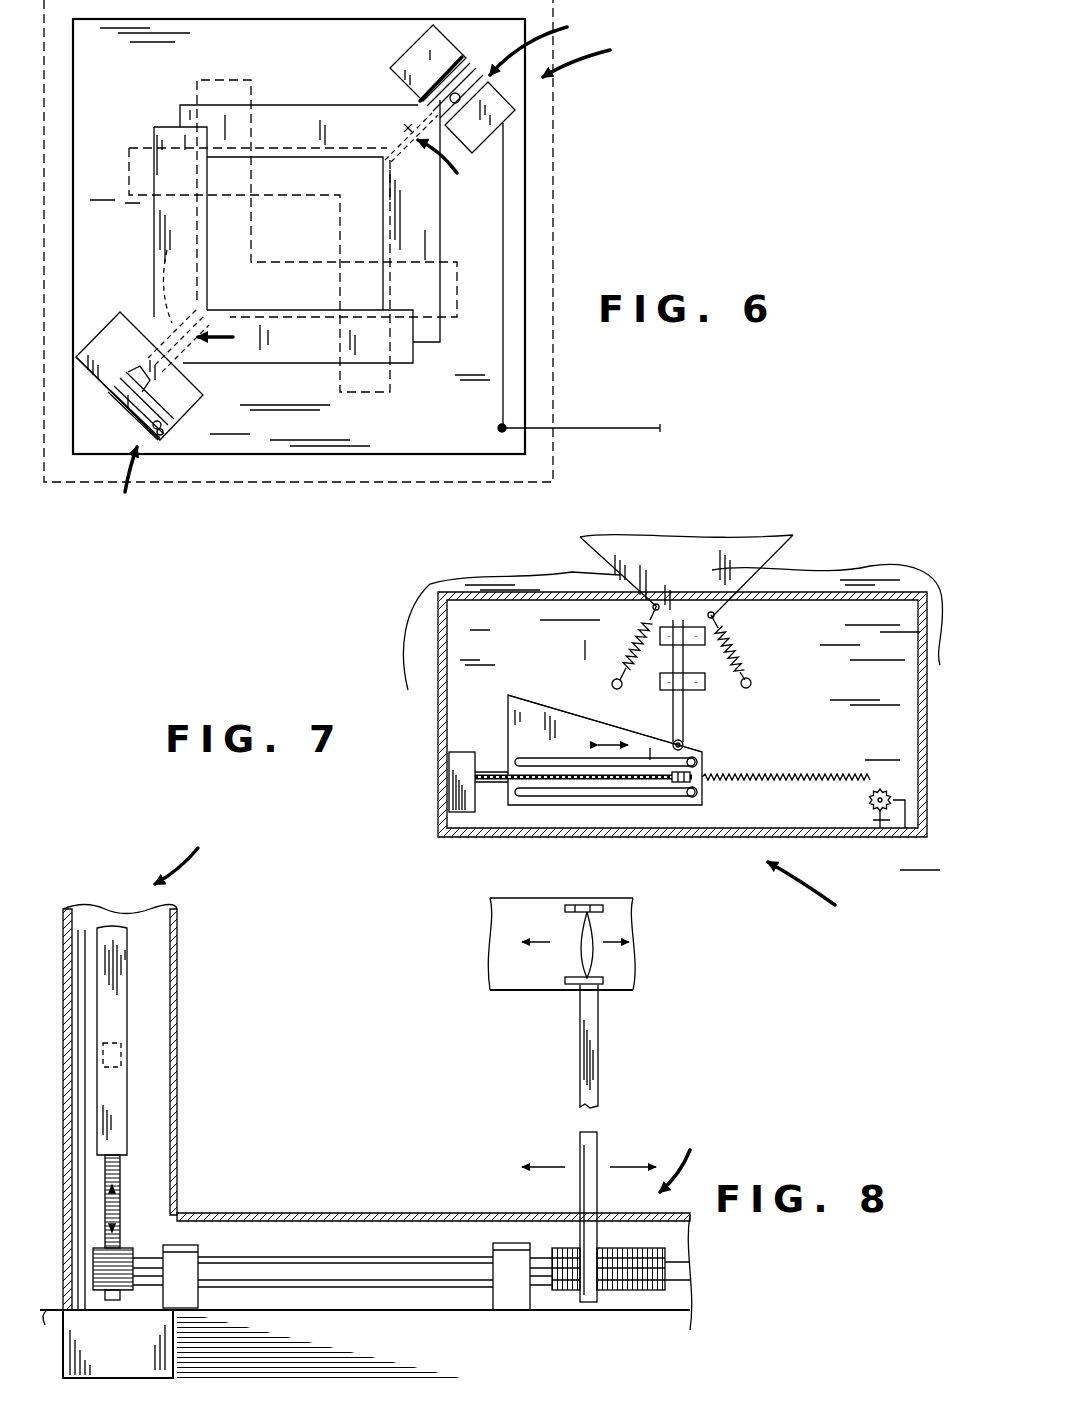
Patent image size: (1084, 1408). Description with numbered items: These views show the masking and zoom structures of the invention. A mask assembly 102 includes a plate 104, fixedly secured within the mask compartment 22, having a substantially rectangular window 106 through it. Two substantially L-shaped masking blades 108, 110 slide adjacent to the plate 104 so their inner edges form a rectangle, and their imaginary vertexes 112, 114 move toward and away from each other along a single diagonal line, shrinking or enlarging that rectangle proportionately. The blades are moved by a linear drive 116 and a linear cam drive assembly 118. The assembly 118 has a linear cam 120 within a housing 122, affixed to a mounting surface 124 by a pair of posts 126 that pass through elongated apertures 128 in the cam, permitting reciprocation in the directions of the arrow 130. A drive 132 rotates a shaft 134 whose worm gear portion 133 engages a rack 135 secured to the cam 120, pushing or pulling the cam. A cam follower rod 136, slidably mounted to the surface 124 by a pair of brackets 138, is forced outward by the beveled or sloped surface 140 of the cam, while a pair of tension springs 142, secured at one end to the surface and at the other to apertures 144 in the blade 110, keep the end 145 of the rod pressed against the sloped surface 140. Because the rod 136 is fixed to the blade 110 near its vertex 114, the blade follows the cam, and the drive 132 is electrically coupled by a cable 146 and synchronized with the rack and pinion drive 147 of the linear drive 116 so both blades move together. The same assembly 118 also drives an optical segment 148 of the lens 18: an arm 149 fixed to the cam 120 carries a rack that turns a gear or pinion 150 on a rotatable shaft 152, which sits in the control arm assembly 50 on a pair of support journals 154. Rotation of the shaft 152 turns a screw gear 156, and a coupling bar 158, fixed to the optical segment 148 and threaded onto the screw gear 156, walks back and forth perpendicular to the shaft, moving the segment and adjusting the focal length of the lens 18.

In FIG. 8, the lens 18 is at (493, 960).
In FIG. 6, the mask compartment 22 is at (553, 174).
In FIG. 8, the mask compartment 22 is at (63, 948).
In FIG. 8, the control arm assembly 50 is at (620, 1211).
In FIG. 6, the mask assembly 102 is at (600, 56).
In FIG. 8, the mask assembly 102 is at (196, 850).
In FIG. 6, the plate 104 is at (150, 89).
In FIG. 7, the plate 104 is at (860, 575).
In FIG. 8, the plate 104 is at (80, 928).
In FIG. 6, the window 106 is at (305, 306).
In FIG. 6, the masking blade 108 is at (296, 104).
In FIG. 6, the masking blade 110 is at (154, 220).
In FIG. 7, the masking blade 110 is at (740, 537).
In FIG. 6, the imaginary vertex 112 is at (441, 152).
In FIG. 6, the imaginary vertex 114 is at (241, 338).
In FIG. 6, the linear drive 116 is at (448, 50).
In FIG. 6, the linear cam drive assembly 118 is at (124, 487).
In FIG. 7, the linear cam drive assembly 118 is at (827, 891).
In FIG. 6, the linear cam 120 is at (157, 353).
In FIG. 7, the linear cam 120 is at (521, 712).
In FIG. 8, the linear cam 120 is at (150, 980).
In FIG. 6, the housing 122 is at (120, 358).
In FIG. 7, the housing 122 is at (480, 836).
In FIG. 7, the mounting surface 124 is at (520, 670).
In FIG. 7, the posts 126 is at (699, 762).
In FIG. 7, the elongated apertures 128 is at (550, 759).
In FIG. 7, the arrow 130 is at (614, 740).
In FIG. 7, the drive 132 is at (460, 751).
In FIG. 7, the worm gear portion 133 is at (592, 782).
In FIG. 7, the rotating shaft 134 is at (492, 783).
In FIG. 7, the rack 135 is at (672, 781).
In FIG. 7, the cam follower rod 136 is at (689, 720).
In FIG. 8, the cam follower rod 136 is at (121, 1050).
In FIG. 7, the brackets 138 is at (688, 627).
In FIG. 7, the sloped surface 140 is at (640, 734).
In FIG. 6, the springs 142 is at (238, 302).
In FIG. 7, the springs 142 is at (632, 636).
In FIG. 7, the apertures 144 is at (655, 604).
In FIG. 7, the end 145 is at (686, 747).
In FIG. 6, the cable 146 is at (500, 316).
In FIG. 6, the rack and pinion drive 147 is at (553, 42).
In FIG. 8, the optical segment 148 is at (582, 945).
In FIG. 6, the arm 149 is at (152, 402).
In FIG. 7, the arm 149 is at (830, 778).
In FIG. 8, the arm 149 is at (118, 1199).
In FIG. 6, the pinion 150 is at (166, 432).
In FIG. 7, the pinion 150 is at (868, 802).
In FIG. 8, the pinion 150 is at (125, 1249).
In FIG. 8, the shaft 152 is at (290, 1258).
In FIG. 7, the support journals 154 is at (915, 831).
In FIG. 8, the support journals 154 is at (190, 1247).
In FIG. 8, the screw gear 156 is at (618, 1255).
In FIG. 8, the coupling bar 158 is at (601, 1084).